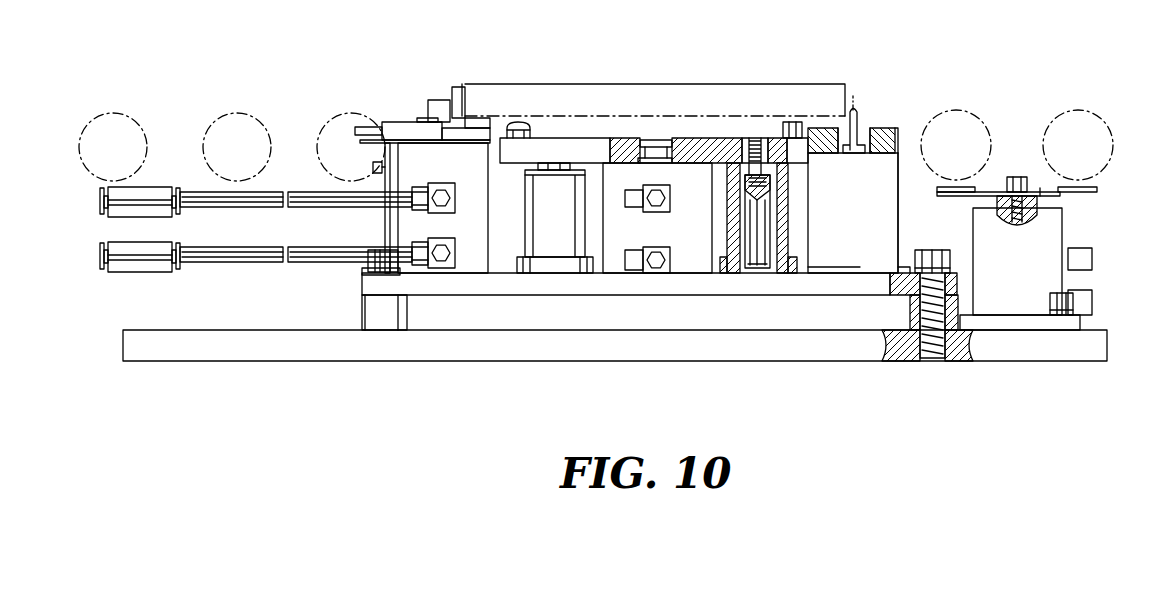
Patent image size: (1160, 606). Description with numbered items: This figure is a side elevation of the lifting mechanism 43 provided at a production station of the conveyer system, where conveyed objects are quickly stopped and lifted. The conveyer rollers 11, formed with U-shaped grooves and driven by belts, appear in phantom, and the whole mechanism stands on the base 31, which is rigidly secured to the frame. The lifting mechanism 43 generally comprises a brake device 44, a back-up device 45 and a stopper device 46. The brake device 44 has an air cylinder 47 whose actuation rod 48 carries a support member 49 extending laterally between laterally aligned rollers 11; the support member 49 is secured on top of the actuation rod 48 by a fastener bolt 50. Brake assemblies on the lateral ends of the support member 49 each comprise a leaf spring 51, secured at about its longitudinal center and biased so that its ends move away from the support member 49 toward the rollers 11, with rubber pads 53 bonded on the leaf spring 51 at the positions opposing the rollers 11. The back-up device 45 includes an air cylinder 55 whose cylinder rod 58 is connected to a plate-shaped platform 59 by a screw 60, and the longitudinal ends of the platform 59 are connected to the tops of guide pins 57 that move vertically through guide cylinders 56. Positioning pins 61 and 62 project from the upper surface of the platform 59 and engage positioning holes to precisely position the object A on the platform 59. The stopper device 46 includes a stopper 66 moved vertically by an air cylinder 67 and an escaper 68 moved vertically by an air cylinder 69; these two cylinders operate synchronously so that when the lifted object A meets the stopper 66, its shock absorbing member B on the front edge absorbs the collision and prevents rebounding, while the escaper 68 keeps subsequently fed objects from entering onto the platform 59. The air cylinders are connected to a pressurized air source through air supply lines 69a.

The rollers 11 is at (237, 113).
The base 31 is at (1095, 344).
The lifting mechanism 43 is at (640, 364).
The brake device 44 is at (1076, 236).
The back-up device 45 is at (651, 126).
The stopper device 46 is at (391, 116).
The air cylinder 47 is at (1062, 281).
The actuation rod 48 is at (1039, 212).
The support member 49 is at (1040, 196).
The fastener bolt 50 is at (1012, 177).
The leaf spring 51 is at (1040, 190).
The rubber pads 53 is at (950, 186).
The air cylinder 55 is at (716, 187).
The guide cylinders 56 is at (553, 248).
The guide pins 57 is at (552, 163).
The cylinder rod 58 is at (686, 138).
The platform 59 is at (586, 138).
The screw 60 is at (755, 138).
The positioning pin 61 is at (511, 122).
The positioning pin 62 is at (800, 122).
The stopper 66 is at (437, 100).
The air cylinder 67 is at (487, 250).
The escaper 68 is at (853, 124).
The air cylinder 69 is at (899, 157).
The air supply lines 69a is at (255, 205).
The object A is at (622, 84).
The shock absorbing member B is at (457, 110).